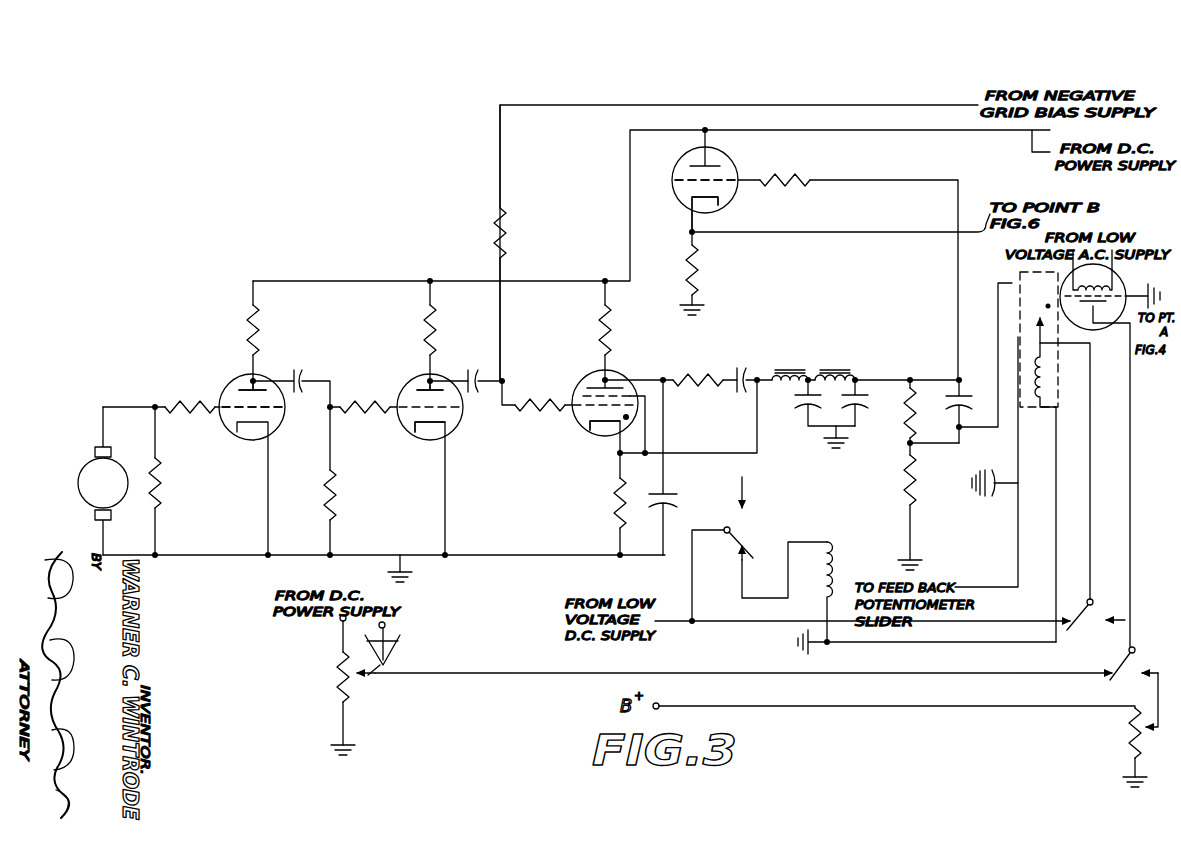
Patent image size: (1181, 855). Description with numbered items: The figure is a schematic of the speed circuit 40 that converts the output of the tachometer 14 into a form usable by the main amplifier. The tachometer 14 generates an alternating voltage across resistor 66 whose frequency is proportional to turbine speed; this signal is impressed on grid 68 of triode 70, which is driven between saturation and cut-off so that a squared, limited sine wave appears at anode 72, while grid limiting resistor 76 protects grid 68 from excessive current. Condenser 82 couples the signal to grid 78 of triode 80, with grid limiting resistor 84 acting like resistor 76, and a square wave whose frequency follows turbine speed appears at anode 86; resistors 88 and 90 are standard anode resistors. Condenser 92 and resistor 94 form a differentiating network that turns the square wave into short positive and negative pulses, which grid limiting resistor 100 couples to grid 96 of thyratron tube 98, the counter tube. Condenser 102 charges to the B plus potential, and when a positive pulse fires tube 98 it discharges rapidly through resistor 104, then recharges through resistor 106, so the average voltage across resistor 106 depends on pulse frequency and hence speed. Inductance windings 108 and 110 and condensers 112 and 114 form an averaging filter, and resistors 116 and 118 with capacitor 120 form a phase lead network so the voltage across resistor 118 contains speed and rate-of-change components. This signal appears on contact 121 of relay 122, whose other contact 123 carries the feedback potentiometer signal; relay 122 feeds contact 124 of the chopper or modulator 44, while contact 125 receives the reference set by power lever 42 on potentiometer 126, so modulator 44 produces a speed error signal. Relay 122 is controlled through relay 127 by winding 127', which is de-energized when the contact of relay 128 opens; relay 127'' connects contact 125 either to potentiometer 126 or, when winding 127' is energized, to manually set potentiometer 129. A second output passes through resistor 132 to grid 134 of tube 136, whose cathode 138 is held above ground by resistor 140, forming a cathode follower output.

The tachometer 14 is at (79, 483).
The amplifier circuit 40 is at (422, 218).
The power lever 42 is at (400, 655).
The chopper or modulator 44 is at (1120, 279).
The resistor 66 is at (160, 480).
The grid 68 is at (274, 420).
The triode 70 is at (250, 375).
The anode 72 is at (240, 380).
The grid limiting resistor 76 is at (178, 398).
The grid 78 is at (450, 424).
The triode 80 is at (425, 430).
The condenser 82 is at (304, 375).
The grid limiting resistor 84 is at (377, 398).
The anode 86 is at (428, 378).
The anode resistor 88 is at (248, 321).
The anode resistor 90 is at (432, 324).
The condenser 92 is at (482, 378).
The resistor 94 is at (504, 216).
The grid 96 is at (578, 422).
The thyratron tube 98 is at (592, 438).
The grid limiting resistor 100 is at (540, 400).
The condenser 102 is at (750, 375).
The resistor 104 is at (612, 332).
The resistor 106 is at (616, 493).
The inductance winding 108 is at (788, 368).
The inductance winding 110 is at (836, 367).
The condenser 112 is at (806, 410).
The condenser 114 is at (855, 412).
The resistor 116 is at (920, 416).
The resistor 118 is at (908, 476).
The capacitor 120 is at (965, 393).
The contact 121 is at (1040, 292).
The relay 122 is at (1040, 310).
The contact 123 is at (1072, 306).
The contact 124 is at (1073, 308).
The contact 125 is at (1107, 308).
The potentiometer 126 is at (338, 683).
The relay 127 is at (1076, 602).
The winding 127' is at (858, 586).
The relay 127'' is at (1145, 652).
The relay 128 is at (742, 540).
The potentiometer 129 is at (1128, 733).
The resistor 132 is at (778, 173).
The grid 134 is at (680, 161).
The tube 136 is at (678, 204).
The cathode 138 is at (718, 213).
The resistor 140 is at (702, 263).